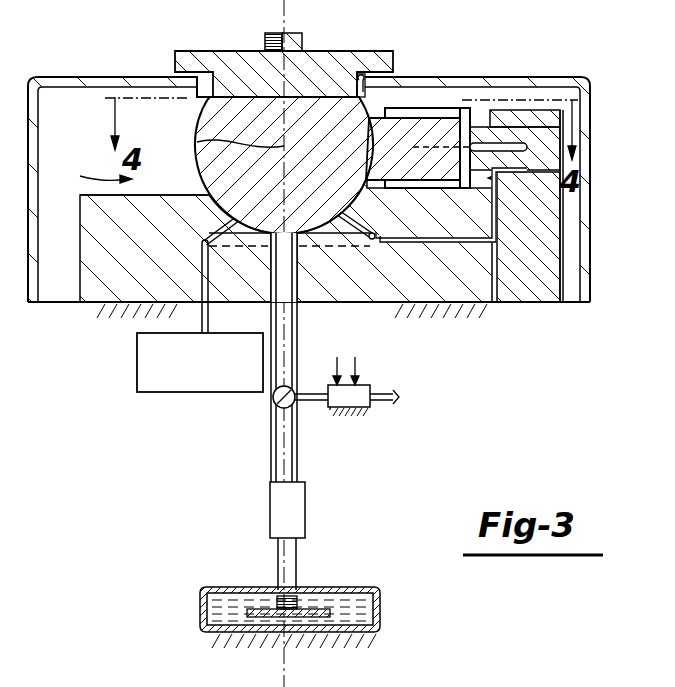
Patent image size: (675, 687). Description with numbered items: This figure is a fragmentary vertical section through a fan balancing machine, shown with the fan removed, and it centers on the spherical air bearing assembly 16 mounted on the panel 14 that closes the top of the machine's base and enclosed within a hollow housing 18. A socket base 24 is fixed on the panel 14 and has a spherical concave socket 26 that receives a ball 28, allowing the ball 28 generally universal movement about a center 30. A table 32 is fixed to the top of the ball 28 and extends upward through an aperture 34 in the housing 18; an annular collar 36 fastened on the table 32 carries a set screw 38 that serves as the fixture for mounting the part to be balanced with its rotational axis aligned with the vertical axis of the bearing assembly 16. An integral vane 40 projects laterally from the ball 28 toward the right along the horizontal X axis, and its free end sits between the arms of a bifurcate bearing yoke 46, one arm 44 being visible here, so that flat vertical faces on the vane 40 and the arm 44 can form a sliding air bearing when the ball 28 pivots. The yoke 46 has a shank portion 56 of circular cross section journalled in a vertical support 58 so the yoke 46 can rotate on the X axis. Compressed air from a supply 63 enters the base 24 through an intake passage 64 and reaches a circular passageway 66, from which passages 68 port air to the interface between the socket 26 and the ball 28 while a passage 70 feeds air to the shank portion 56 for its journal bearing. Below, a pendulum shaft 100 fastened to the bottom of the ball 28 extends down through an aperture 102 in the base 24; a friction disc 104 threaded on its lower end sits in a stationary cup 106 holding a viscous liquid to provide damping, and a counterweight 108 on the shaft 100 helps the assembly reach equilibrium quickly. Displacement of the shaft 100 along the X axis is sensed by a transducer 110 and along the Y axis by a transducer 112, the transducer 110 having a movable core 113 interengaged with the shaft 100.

The panel 14 is at (467, 312).
The spherical air bearing assembly 16 is at (93, 174).
The hollow housing 18 is at (592, 110).
The socket base 24 is at (86, 298).
The spherical concave socket 26 is at (213, 202).
The ball 28 is at (200, 162).
The center 30 is at (205, 143).
The table 32 is at (397, 70).
The aperture 34 is at (370, 84).
The annular collar 36 is at (304, 42).
The set screw 38 is at (266, 40).
The vane 40 is at (445, 125).
The arm 44 is at (490, 186).
The bifurcate bearing yoke 46 is at (495, 181).
The shank portion 56 is at (563, 112).
The vertical support 58 is at (548, 290).
The supply 63 is at (137, 375).
The intake passage 64 is at (208, 300).
The circular passageway 66 is at (340, 240).
The passages 68 is at (200, 240).
The passage 70 is at (462, 208).
The pendulum shaft 100 is at (300, 345).
The aperture 102 is at (290, 300).
The friction disc 104 is at (318, 610).
The stationary cup 106 is at (378, 613).
The counterweight 108 is at (297, 505).
The transducer 110 is at (362, 392).
The transducer 112 is at (274, 404).
The movable core 113 is at (330, 410).